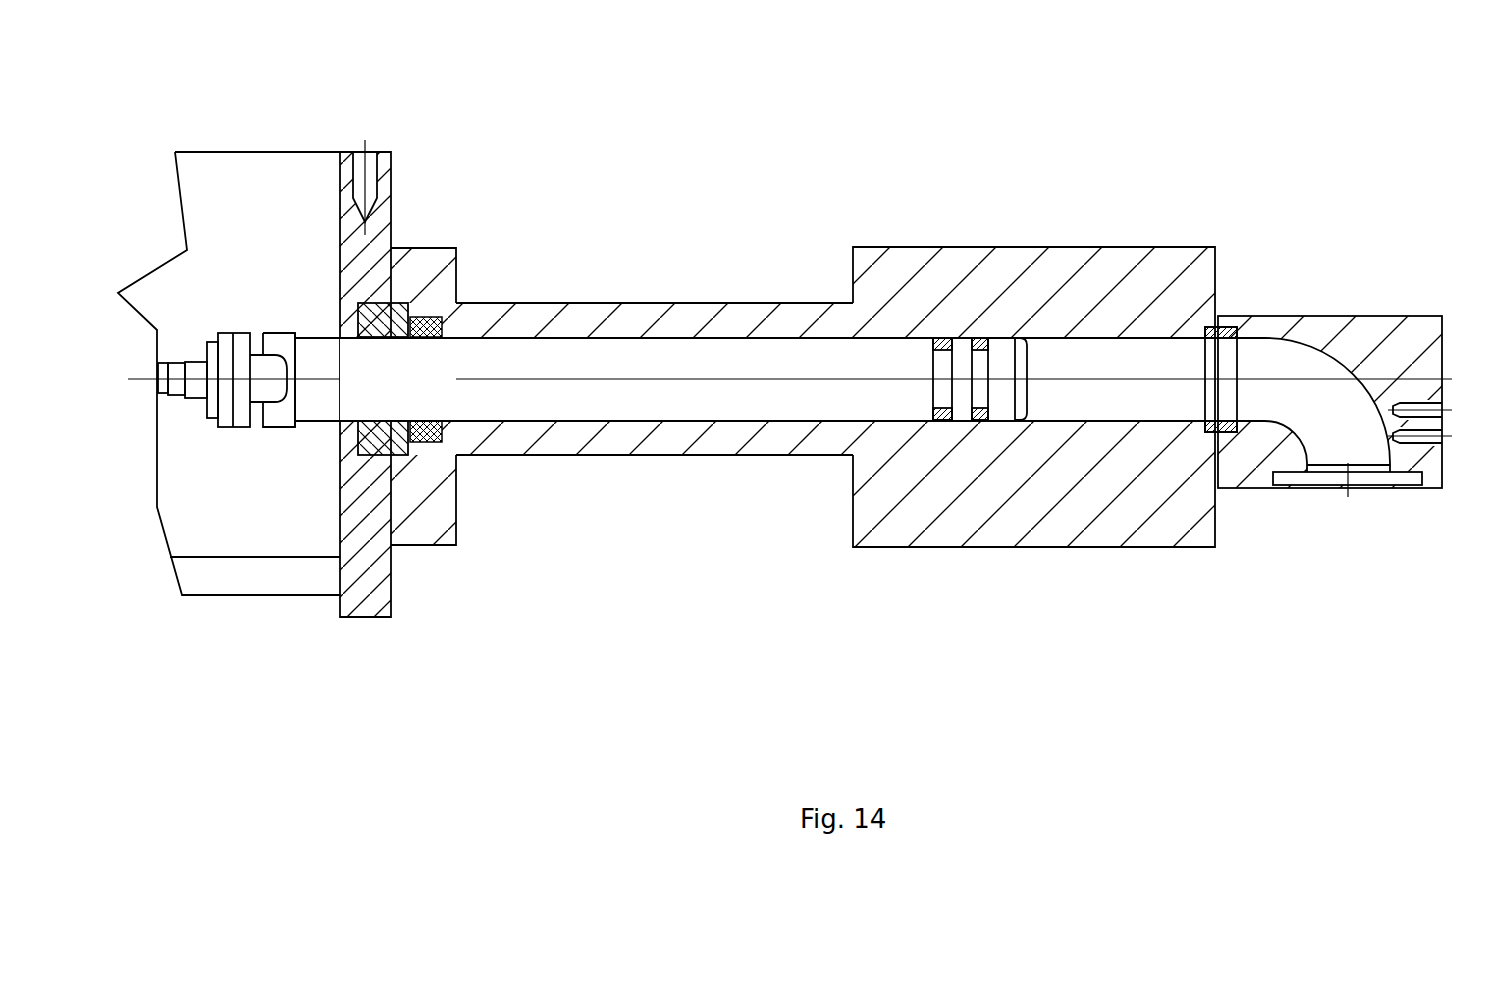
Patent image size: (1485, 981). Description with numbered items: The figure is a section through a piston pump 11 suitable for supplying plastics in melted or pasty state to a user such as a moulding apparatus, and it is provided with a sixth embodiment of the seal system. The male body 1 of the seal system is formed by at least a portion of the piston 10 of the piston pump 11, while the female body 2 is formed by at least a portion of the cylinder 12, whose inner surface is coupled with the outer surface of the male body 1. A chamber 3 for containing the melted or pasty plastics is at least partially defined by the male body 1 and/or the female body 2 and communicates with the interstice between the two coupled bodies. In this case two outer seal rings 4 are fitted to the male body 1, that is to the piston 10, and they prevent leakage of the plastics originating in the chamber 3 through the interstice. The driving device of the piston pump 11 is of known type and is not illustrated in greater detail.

The male body 1 is at (1005, 413).
The female body 2 is at (1008, 263).
The chamber 3 is at (1092, 352).
The seal ring 4 is at (942, 338).
The piston 10 is at (613, 355).
The piston pump 11 is at (391, 34).
The cylinder 12 is at (614, 445).